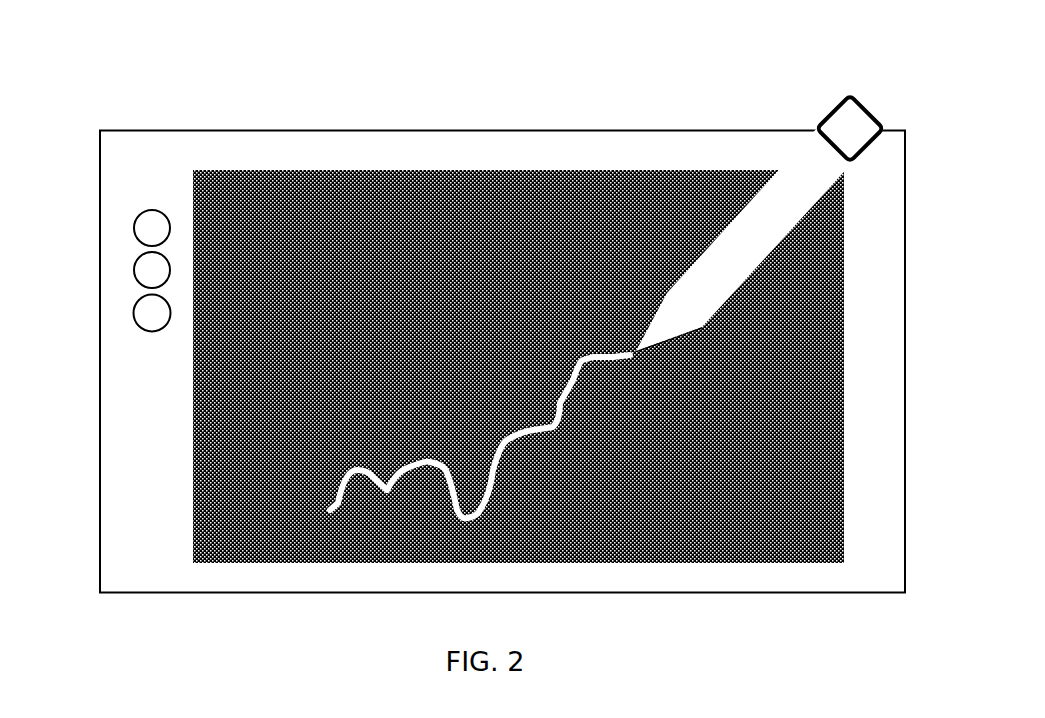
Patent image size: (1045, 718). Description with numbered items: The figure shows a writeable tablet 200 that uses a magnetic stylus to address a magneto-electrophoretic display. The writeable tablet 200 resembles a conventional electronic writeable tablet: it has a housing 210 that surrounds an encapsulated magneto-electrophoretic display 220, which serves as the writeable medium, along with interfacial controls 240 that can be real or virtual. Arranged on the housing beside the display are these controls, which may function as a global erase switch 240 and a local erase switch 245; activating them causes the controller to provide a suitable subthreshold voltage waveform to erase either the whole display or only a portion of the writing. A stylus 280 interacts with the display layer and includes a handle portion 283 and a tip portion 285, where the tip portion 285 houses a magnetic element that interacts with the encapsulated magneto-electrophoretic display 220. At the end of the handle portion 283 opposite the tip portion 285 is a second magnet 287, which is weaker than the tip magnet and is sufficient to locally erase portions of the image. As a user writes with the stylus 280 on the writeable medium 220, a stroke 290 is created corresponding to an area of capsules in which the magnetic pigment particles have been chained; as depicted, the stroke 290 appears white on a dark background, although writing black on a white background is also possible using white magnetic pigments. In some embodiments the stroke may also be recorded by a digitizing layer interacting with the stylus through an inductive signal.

The writeable tablet 200 is at (472, 308).
The housing 210 is at (154, 165).
The encapsulated magneto-electrophoretic display 220 is at (405, 172).
The interfacial controls 240 is at (151, 313).
The local erase switch 245 is at (138, 287).
The stylus 280 is at (776, 246).
The handle portion 283 is at (817, 162).
The tip portion 285 is at (677, 333).
The second magnet 287 is at (852, 120).
The stroke 290 is at (583, 377).